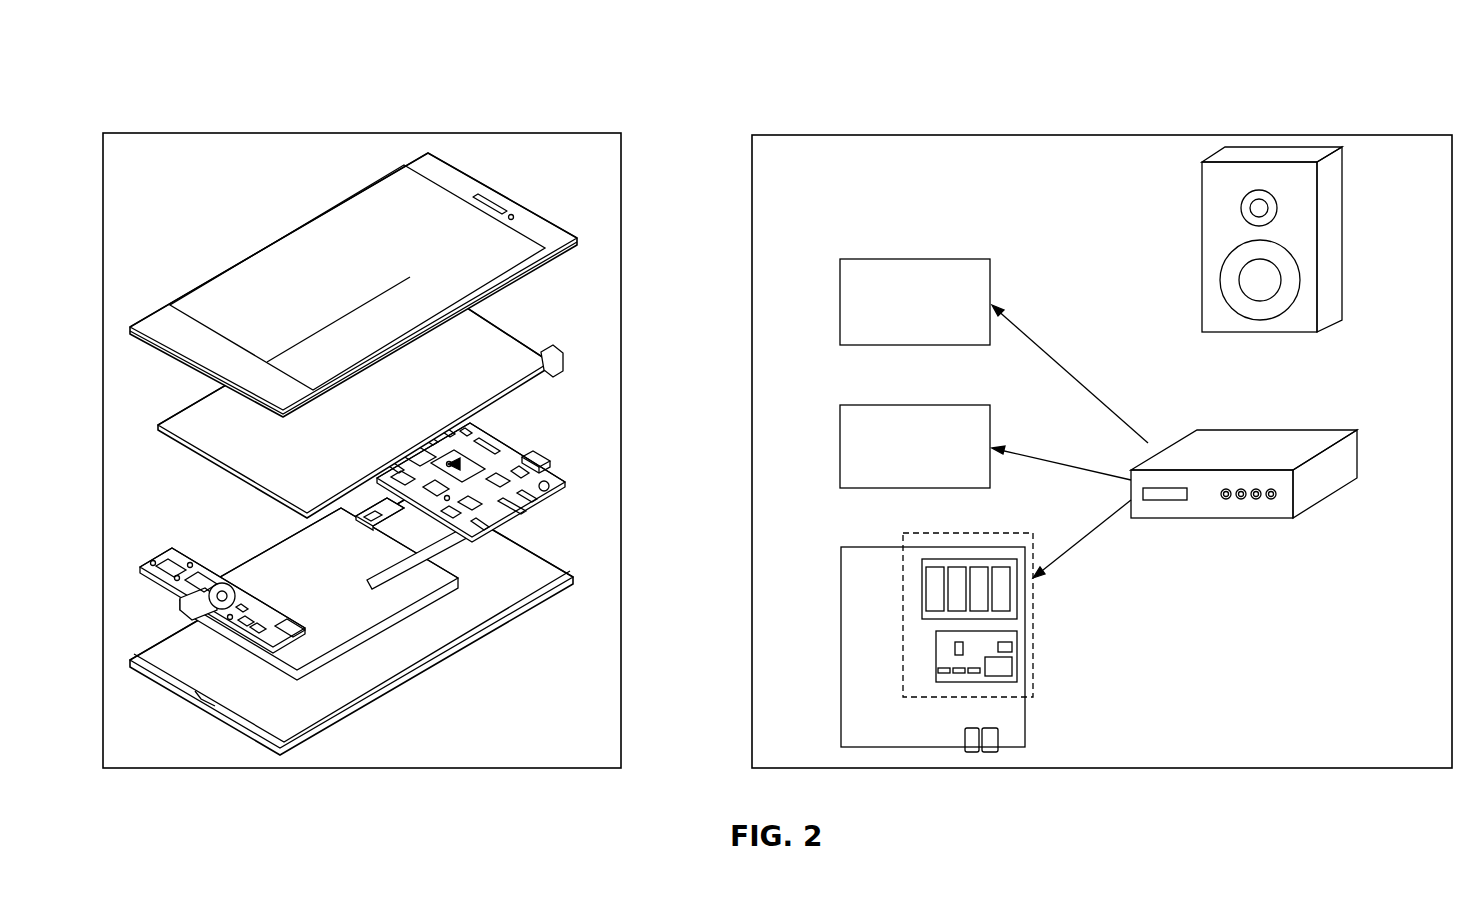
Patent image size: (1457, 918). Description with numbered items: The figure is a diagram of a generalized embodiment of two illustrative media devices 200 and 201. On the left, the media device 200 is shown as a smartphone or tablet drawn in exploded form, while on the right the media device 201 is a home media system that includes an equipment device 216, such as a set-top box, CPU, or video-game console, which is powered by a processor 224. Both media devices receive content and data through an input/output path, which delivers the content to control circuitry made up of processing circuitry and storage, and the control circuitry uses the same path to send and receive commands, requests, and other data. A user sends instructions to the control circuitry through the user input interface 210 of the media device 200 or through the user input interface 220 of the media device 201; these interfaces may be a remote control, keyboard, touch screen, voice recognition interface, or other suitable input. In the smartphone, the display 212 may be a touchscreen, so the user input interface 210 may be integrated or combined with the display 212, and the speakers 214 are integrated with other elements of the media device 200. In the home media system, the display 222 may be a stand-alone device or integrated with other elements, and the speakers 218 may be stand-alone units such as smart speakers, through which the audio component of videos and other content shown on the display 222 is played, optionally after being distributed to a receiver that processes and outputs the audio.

The media device 200 is at (193, 92).
The media device 201 is at (1322, 86).
The user input interface 210 is at (353, 254).
The display 212 is at (530, 367).
The speakers 214 is at (486, 192).
The equipment device 216 is at (1277, 429).
The speakers 218 is at (1342, 281).
The user input interface 220 is at (915, 258).
The display 222 is at (915, 405).
The processor 224 is at (1025, 722).